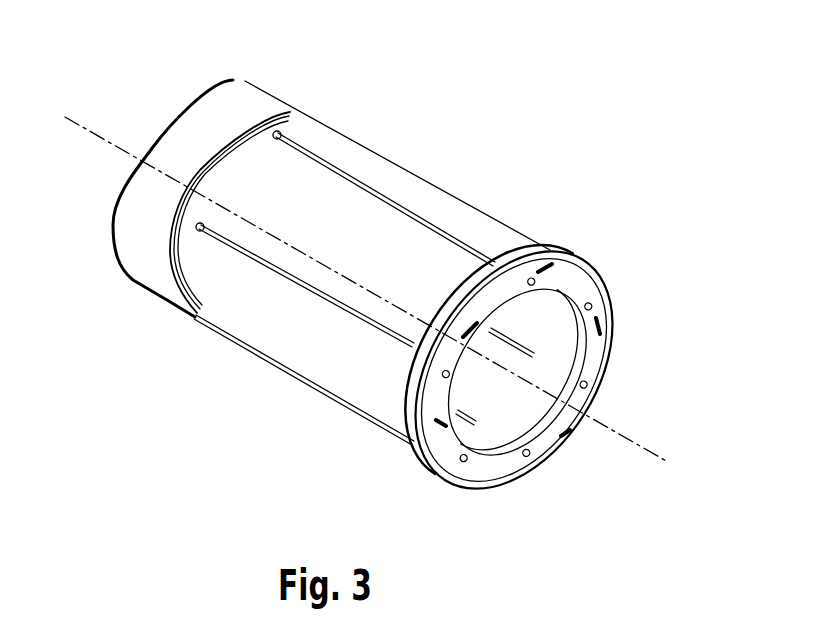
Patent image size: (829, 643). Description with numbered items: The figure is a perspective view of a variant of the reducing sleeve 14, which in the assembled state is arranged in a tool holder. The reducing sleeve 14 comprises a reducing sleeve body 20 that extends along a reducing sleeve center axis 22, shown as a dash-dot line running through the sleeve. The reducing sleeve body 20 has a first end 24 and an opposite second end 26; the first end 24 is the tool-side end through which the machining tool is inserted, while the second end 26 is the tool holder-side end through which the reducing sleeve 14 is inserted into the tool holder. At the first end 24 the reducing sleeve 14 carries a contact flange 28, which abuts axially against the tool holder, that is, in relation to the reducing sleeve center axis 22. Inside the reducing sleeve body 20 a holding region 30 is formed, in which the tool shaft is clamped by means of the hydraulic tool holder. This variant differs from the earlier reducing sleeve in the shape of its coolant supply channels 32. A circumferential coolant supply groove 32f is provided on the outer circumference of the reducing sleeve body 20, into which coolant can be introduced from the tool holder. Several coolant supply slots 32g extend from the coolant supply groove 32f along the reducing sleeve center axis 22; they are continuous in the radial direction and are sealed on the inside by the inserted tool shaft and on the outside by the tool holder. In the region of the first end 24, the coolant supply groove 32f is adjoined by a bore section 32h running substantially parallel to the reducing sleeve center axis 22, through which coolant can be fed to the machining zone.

The reducing sleeve 14 is at (428, 158).
The reducing sleeve body 20 is at (473, 232).
The reducing sleeve center axis 22 is at (653, 453).
The first end 24 is at (606, 282).
The second end 26 is at (179, 94).
The contact flange 28 is at (551, 246).
The holding region 30 is at (510, 432).
The coolant supply channels 32 is at (425, 292).
The coolant supply groove 32f is at (236, 133).
The coolant supply slots 32g is at (355, 178).
The bore section 32h is at (588, 380).